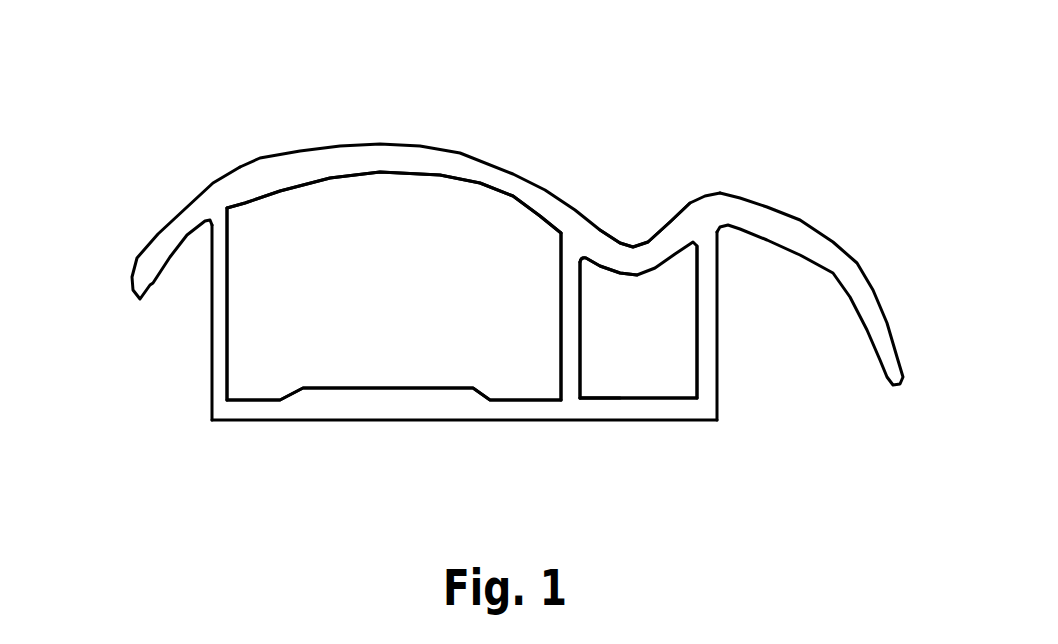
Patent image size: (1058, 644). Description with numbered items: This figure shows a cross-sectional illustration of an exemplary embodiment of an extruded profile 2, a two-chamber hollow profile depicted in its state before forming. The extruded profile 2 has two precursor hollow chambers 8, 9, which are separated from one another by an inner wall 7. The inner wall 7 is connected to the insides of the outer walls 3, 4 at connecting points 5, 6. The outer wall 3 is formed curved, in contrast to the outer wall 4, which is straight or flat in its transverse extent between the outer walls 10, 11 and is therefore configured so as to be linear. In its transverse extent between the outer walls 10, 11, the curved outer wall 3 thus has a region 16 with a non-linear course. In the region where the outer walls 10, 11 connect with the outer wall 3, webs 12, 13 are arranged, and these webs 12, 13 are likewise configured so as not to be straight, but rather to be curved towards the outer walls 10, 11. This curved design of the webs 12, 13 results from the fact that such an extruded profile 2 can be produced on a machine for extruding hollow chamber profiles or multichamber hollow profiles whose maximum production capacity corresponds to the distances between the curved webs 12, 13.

The extruded profile 2 is at (833, 56).
The outer wall 3 is at (513, 183).
The outer wall 4 is at (443, 405).
The connecting point 5 is at (588, 268).
The connecting point 6 is at (573, 393).
The inner wall 7 is at (530, 323).
The precursor hollow chamber 8 is at (353, 233).
The precursor hollow chamber 9 is at (647, 365).
The outer wall 10 is at (708, 333).
The outer wall 11 is at (222, 280).
The web 12 is at (857, 273).
The web 13 is at (160, 242).
The region 16 is at (590, 213).